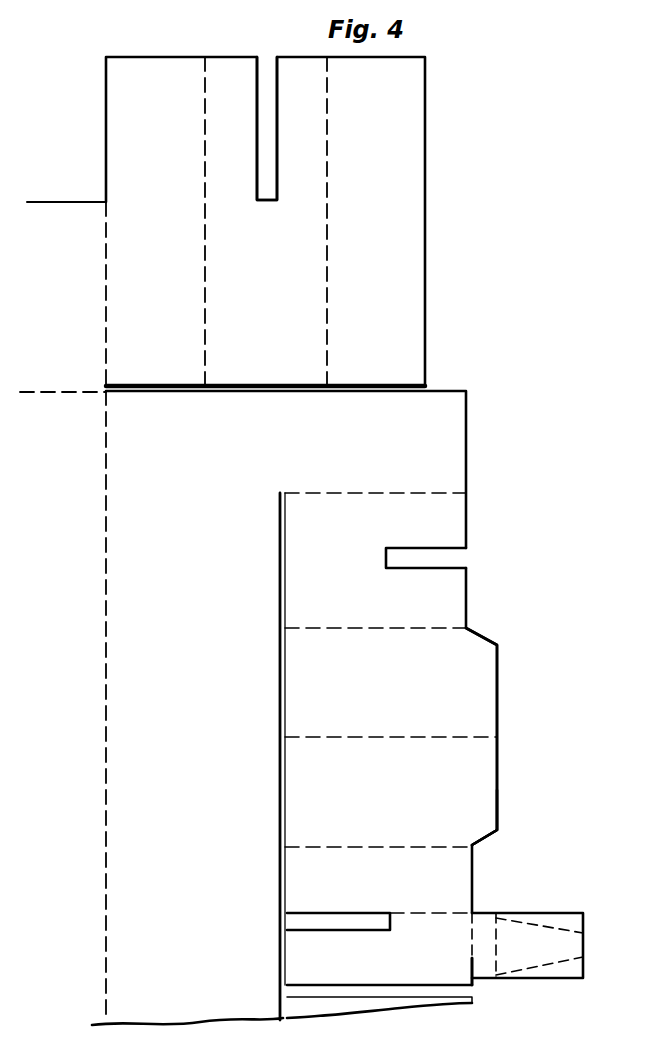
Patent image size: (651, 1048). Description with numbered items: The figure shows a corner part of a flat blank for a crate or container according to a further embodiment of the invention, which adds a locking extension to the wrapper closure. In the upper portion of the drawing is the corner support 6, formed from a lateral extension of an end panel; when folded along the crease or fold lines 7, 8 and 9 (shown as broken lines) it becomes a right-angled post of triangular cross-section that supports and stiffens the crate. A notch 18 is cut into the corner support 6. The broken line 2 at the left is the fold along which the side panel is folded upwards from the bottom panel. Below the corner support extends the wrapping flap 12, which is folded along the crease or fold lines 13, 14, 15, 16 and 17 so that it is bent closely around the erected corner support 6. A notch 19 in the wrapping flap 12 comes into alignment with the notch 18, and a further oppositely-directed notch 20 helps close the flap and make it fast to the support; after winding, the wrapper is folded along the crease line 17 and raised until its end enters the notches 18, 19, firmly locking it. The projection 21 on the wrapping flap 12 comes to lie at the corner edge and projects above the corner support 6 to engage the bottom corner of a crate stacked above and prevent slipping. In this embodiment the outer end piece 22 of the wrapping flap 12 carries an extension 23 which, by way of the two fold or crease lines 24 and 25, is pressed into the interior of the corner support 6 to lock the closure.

The broken line 2 is at (226, 616).
The corner support 6 is at (318, 340).
The crease or fold line 7 is at (329, 101).
The crease or fold line 8 is at (205, 205).
The crease or fold line 9 is at (108, 275).
The wrapping flap 12 is at (423, 694).
The crease or fold line 13 is at (428, 493).
The crease or fold line 14 is at (437, 628).
The crease or fold line 15 is at (463, 738).
The crease or fold line 16 is at (440, 848).
The crease line 17 is at (443, 913).
The notch 18 is at (264, 163).
The notch 19 is at (455, 561).
The oppositely-directed notch 20 is at (300, 920).
The projection 21 is at (498, 798).
The end piece 22 is at (443, 972).
The extension 23 is at (570, 980).
The fold or crease line 24 is at (496, 943).
The fold or crease line 25 is at (473, 960).